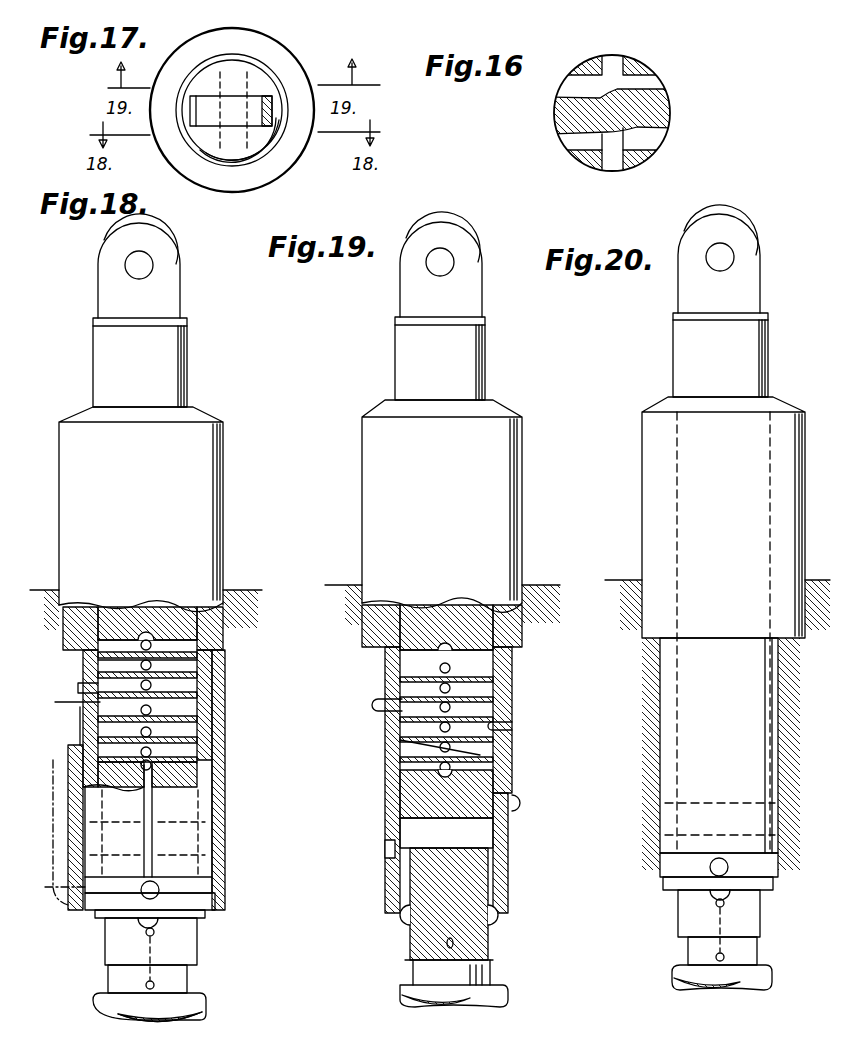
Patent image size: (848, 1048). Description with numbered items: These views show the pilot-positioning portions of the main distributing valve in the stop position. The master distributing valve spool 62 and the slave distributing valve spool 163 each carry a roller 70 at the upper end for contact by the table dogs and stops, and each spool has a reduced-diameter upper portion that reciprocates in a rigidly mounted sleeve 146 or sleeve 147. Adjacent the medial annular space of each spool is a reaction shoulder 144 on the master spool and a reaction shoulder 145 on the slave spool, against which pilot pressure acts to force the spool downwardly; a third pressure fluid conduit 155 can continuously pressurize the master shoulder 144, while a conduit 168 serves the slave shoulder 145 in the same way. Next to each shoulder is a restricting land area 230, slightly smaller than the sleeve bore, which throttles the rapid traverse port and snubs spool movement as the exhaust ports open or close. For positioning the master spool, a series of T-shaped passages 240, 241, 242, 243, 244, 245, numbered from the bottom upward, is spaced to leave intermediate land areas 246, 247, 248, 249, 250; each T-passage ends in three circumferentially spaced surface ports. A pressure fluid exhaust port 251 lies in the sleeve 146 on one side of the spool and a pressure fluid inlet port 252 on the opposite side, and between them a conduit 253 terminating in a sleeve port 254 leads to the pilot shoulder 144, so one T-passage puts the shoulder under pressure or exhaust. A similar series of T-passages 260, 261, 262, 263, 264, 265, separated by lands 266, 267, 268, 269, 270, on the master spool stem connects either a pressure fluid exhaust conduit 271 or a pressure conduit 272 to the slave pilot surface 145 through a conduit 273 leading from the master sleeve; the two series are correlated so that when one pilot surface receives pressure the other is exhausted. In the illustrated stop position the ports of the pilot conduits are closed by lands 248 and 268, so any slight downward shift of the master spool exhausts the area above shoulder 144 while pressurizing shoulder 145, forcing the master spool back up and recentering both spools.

In FIG. 17, the master distributing valve spool 62 is at (207, 60).
In FIG. 16, the master distributing valve spool 62 is at (553, 116).
In FIG. 18, the master distributing valve spool 62 is at (175, 380).
In FIG. 19, the master distributing valve spool 62 is at (475, 352).
In FIG. 17, the rollers 70 is at (265, 95).
In FIG. 18, the rollers 70 is at (182, 257).
In FIG. 19, the rollers 70 is at (462, 222).
In FIG. 20, the rollers 70 is at (737, 222).
In FIG. 17, the sleeve 146 is at (276, 172).
In FIG. 18, the sleeve 146 is at (212, 573).
In FIG. 19, the sleeve 146 is at (370, 485).
In FIG. 20, the sleeve 147 is at (653, 512).
In FIG. 20, the slave distributing valve spool 163 is at (752, 360).
In FIG. 18, the reaction shoulder 144 is at (198, 993).
In FIG. 19, the reaction shoulder 144 is at (497, 985).
In FIG. 20, the reaction shoulder 145 is at (678, 963).
In FIG. 18, the third pressure fluid conduit 155 is at (58, 910).
In FIG. 20, the conduit 168 is at (612, 868).
In FIG. 18, the land area 230 is at (198, 948).
In FIG. 20, the land area 230 is at (693, 913).
In FIG. 16, the T-shaped passage 240 is at (657, 139).
In FIG. 18, the T-shaped passage 240 is at (186, 760).
In FIG. 18, the T-shaped passage 241 is at (200, 745).
In FIG. 18, the T-shaped passage 242 is at (216, 690).
In FIG. 18, the T-shaped passage 243 is at (275, 649).
In FIG. 18, the T-shaped passage 244 is at (110, 650).
In FIG. 18, the T-shaped passage 245 is at (168, 625).
In FIG. 18, the land area 246 is at (205, 752).
In FIG. 18, the land area 247 is at (182, 723).
In FIG. 18, the land area 248 is at (218, 671).
In FIG. 18, the land area 249 is at (157, 638).
In FIG. 18, the land area 250 is at (220, 628).
In FIG. 18, the pressure fluid exhaust port 251 is at (100, 680).
In FIG. 18, the pressure fluid inlet port 252 is at (215, 708).
In FIG. 18, the conduit 253 is at (72, 895).
In FIG. 18, the sleeve port 254 is at (71, 703).
In FIG. 16, the T-shaped passage 260 is at (650, 82).
In FIG. 19, the T-shaped passage 260 is at (460, 722).
In FIG. 19, the T-shaped passage 261 is at (512, 730).
In FIG. 19, the T-shaped passage 262 is at (490, 715).
In FIG. 19, the T-shaped passage 263 is at (497, 700).
In FIG. 19, the T-shaped passage 264 is at (500, 681).
In FIG. 19, the T-shaped passage 265 is at (507, 660).
In FIG. 19, the land 266 is at (405, 765).
In FIG. 19, the land 267 is at (400, 750).
In FIG. 19, the land 268 is at (400, 727).
In FIG. 19, the land 269 is at (403, 690).
In FIG. 19, the land 270 is at (410, 676).
In FIG. 19, the pressure fluid exhaust conduit 271 is at (460, 728).
In FIG. 19, the pressure conduit 272 is at (360, 707).
In FIG. 19, the conduit 273 is at (493, 742).
In FIG. 20, the conduit 273 is at (620, 855).